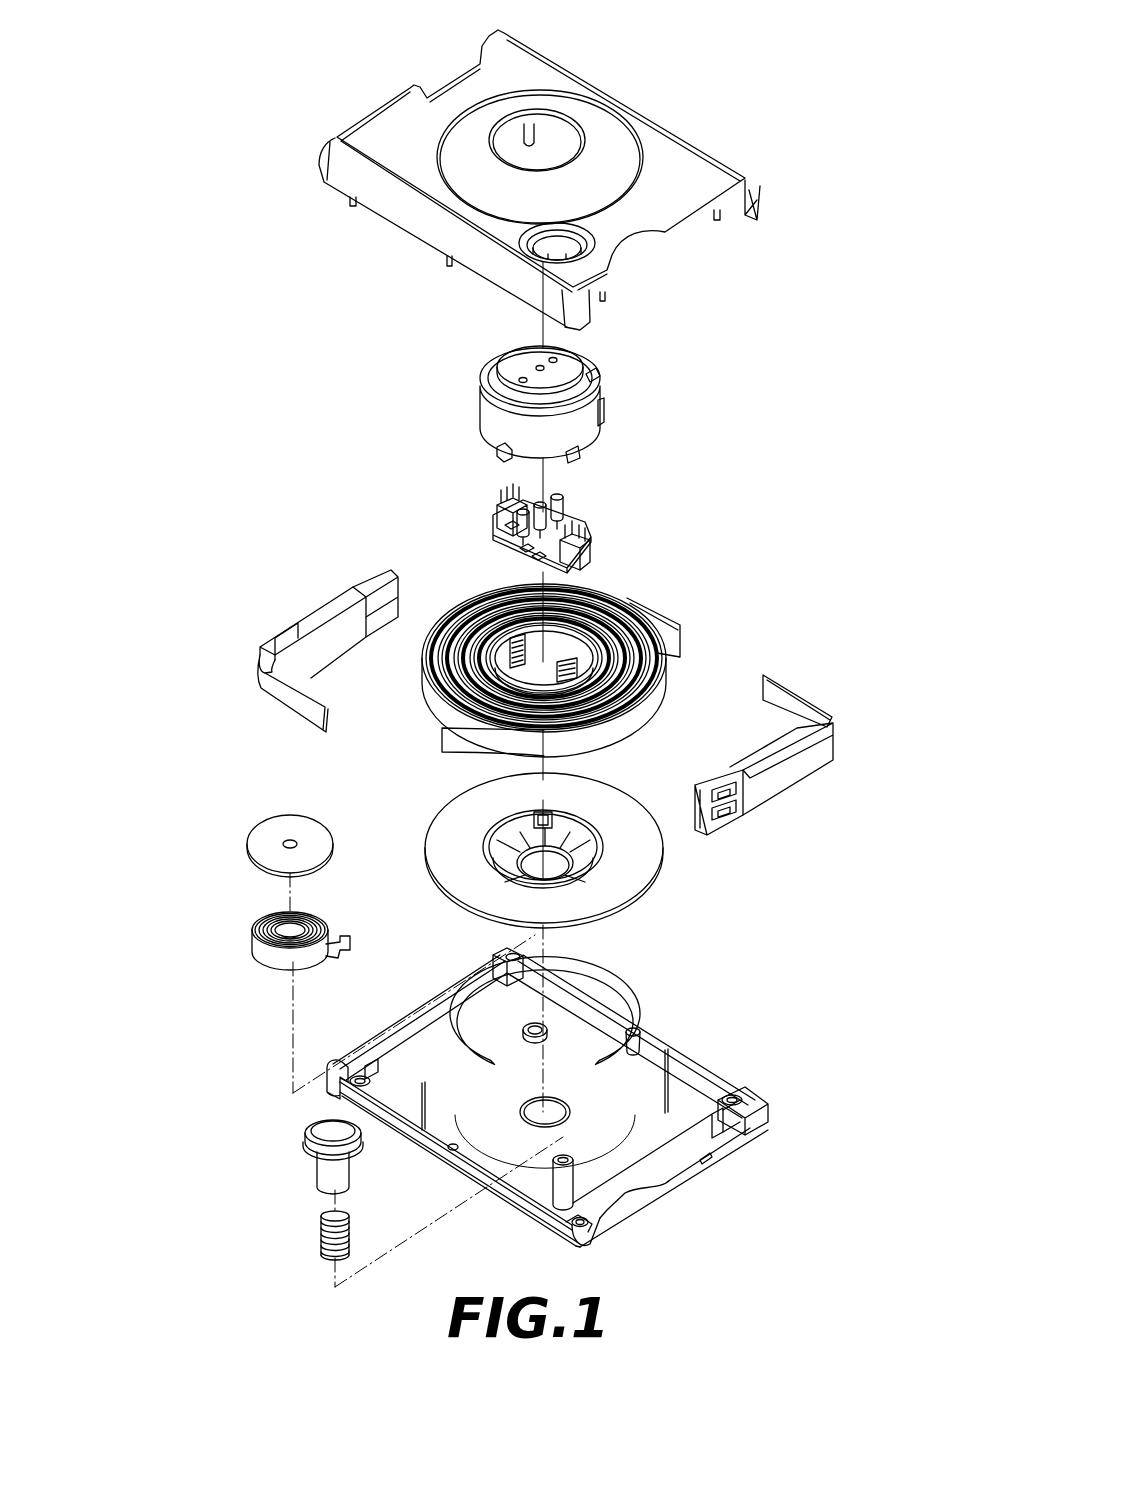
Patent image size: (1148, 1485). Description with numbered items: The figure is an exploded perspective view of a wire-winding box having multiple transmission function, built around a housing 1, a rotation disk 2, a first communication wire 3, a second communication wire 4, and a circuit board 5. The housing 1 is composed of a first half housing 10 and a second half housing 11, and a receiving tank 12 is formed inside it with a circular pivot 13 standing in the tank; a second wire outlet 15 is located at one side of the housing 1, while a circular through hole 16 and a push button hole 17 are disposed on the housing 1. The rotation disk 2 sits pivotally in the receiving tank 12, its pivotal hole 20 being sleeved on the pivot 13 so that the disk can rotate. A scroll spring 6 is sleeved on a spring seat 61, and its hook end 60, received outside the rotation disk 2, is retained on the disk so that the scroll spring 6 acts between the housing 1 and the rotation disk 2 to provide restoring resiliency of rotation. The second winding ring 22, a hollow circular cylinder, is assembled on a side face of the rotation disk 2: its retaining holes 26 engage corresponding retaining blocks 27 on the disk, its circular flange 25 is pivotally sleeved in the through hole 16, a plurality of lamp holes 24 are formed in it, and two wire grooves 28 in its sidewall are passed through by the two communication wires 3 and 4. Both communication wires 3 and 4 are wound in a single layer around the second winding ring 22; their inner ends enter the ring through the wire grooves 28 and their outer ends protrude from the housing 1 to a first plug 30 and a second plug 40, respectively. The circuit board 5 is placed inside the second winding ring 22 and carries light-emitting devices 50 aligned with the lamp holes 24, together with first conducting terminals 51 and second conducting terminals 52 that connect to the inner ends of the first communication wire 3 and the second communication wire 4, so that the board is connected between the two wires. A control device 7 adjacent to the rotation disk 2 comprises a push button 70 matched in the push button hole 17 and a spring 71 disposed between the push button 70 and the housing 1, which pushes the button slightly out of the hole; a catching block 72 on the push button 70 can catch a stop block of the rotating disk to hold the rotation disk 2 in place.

The housing 1 is at (587, 1097).
The rotation disk 2 is at (555, 839).
The first communication wire 3 is at (478, 745).
The second communication wire 4 is at (672, 614).
The circuit board 5 is at (538, 523).
The scroll spring 6 is at (280, 966).
The control device 7 is at (299, 1174).
The first half housing 10 is at (559, 180).
The second half housing 11 is at (640, 1027).
The receiving tank 12 is at (570, 1030).
The pivot 13 is at (575, 1130).
The second wire outlet 15 is at (734, 1145).
The through hole 16 is at (585, 130).
The push button hole 17 is at (545, 248).
The pivotal hole 20 is at (526, 836).
The second winding ring 22 is at (547, 407).
The lamp holes 24 is at (563, 360).
The flange 25 is at (600, 385).
The retaining holes 26 is at (500, 450).
The retaining block 27 is at (580, 808).
The wire grooves 28 is at (600, 425).
The first plug 30 is at (340, 587).
The second plug 40 is at (770, 750).
The light-emitting devices 50 is at (570, 500).
The first conducting terminals 51 is at (500, 510).
The second conducting terminals 52 is at (590, 530).
The hook end 60 is at (330, 958).
The spring seat 61 is at (262, 850).
The push button 70 is at (320, 1133).
The spring 71 is at (286, 1235).
The catching block 72 is at (358, 1147).